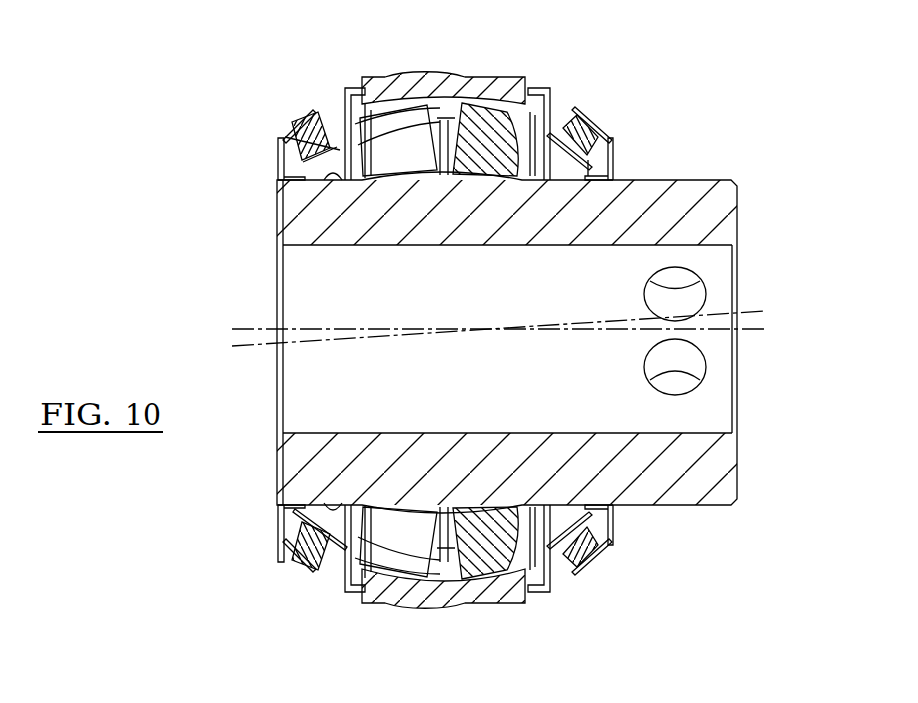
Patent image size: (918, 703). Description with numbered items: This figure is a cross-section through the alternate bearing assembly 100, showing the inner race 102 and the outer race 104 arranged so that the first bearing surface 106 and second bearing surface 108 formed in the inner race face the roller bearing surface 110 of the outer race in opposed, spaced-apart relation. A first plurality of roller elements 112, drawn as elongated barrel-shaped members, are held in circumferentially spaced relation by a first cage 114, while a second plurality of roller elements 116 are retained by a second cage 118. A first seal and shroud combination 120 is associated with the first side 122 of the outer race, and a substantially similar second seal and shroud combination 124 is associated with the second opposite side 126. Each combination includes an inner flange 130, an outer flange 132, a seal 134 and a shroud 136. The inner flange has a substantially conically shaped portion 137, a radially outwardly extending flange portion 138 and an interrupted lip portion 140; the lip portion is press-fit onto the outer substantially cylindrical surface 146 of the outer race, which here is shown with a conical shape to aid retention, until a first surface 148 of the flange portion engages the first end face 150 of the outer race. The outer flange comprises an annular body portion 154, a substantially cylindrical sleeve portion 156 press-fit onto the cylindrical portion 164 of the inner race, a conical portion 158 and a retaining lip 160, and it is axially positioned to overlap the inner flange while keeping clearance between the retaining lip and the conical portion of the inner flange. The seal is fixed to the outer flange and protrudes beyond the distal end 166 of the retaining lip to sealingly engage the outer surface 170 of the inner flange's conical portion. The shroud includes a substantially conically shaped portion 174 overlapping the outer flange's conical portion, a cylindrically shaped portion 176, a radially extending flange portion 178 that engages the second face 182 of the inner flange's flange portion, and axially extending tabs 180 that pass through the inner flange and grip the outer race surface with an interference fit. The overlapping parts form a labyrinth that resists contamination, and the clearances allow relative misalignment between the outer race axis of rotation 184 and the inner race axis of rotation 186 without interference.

The bearing assembly 100 is at (133, 107).
The inner race 102 is at (752, 222).
The outer race 104 is at (419, 43).
The first bearing surface 106 is at (470, 512).
The second bearing surface 108 is at (395, 507).
The roller bearing surface 110 is at (518, 170).
The first plurality of roller elements 112 is at (490, 160).
The first cage 114 is at (392, 507).
The second plurality of roller elements 116 is at (430, 160).
The second cage 118 is at (443, 160).
The first seal and shroud combination 120 is at (266, 540).
The first side 122 is at (317, 577).
The second seal and shroud combination 124 is at (576, 81).
The second opposite side 126 is at (557, 568).
The inner flange 130 is at (583, 100).
The outer flange 132 is at (269, 180).
The seal 134 is at (606, 152).
The shroud 136 is at (343, 87).
The substantially conically shaped portion 137 is at (330, 172).
The radially outwardly extending flange portion 138 is at (557, 520).
The interrupted lip portion 140 is at (360, 590).
The outer substantially cylindrical surface 146 is at (362, 80).
The first surface 148 is at (455, 63).
The first end face 150 is at (330, 110).
The annular body portion 154 is at (612, 167).
The substantially cylindrical sleeve portion 156 is at (303, 182).
The conical portion 158 is at (578, 109).
The retaining lip 160 is at (556, 158).
The cylindrical portion 164 is at (342, 505).
The distal end 166 is at (338, 180).
The outer surface 170 is at (293, 137).
The substantially conically shaped portion 174 is at (297, 113).
The cylindrically shaped portion 176 is at (555, 575).
The radially extending flange portion 178 is at (553, 589).
The axially extending tabs 180 is at (532, 88).
The second face 182 is at (332, 572).
The outer race axis of rotation 184 is at (250, 348).
The inner race axis of rotation 186 is at (252, 330).